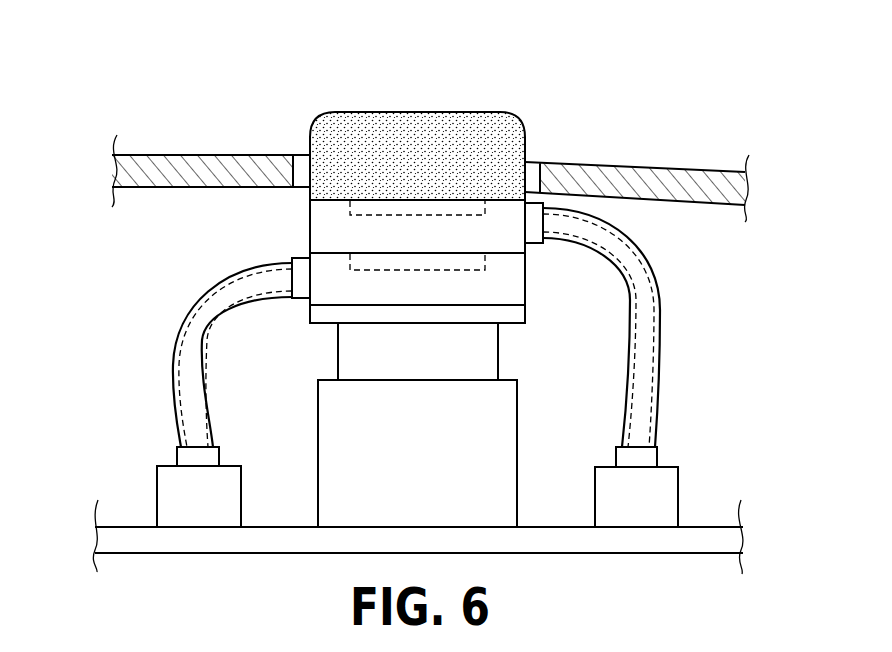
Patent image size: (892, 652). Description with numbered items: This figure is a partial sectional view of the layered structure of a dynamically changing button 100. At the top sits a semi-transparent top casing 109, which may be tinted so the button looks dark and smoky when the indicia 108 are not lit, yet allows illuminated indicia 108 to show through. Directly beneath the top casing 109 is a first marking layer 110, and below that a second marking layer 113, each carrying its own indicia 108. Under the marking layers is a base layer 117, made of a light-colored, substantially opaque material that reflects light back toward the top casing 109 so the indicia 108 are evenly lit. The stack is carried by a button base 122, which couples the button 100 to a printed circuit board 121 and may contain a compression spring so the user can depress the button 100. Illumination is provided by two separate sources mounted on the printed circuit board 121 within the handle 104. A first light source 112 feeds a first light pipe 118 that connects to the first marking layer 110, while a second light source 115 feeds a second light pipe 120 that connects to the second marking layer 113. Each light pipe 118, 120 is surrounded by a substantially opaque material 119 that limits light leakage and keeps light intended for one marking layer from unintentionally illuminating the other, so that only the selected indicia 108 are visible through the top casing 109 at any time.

The dynamically changing button 100 is at (435, 102).
The handle 104 is at (643, 163).
The indicia 108 is at (420, 215).
The top casing 109 is at (383, 112).
The first marking layer 110 is at (310, 232).
The first light source 112 is at (595, 487).
The second marking layer 113 is at (525, 282).
The second light source 115 is at (157, 487).
The base layer 117 is at (512, 325).
The first light pipe 118 is at (655, 358).
The substantially opaque material 119 is at (182, 323).
The second light pipe 120 is at (208, 378).
The printed circuit board 121 is at (540, 572).
The button base 122 is at (318, 432).